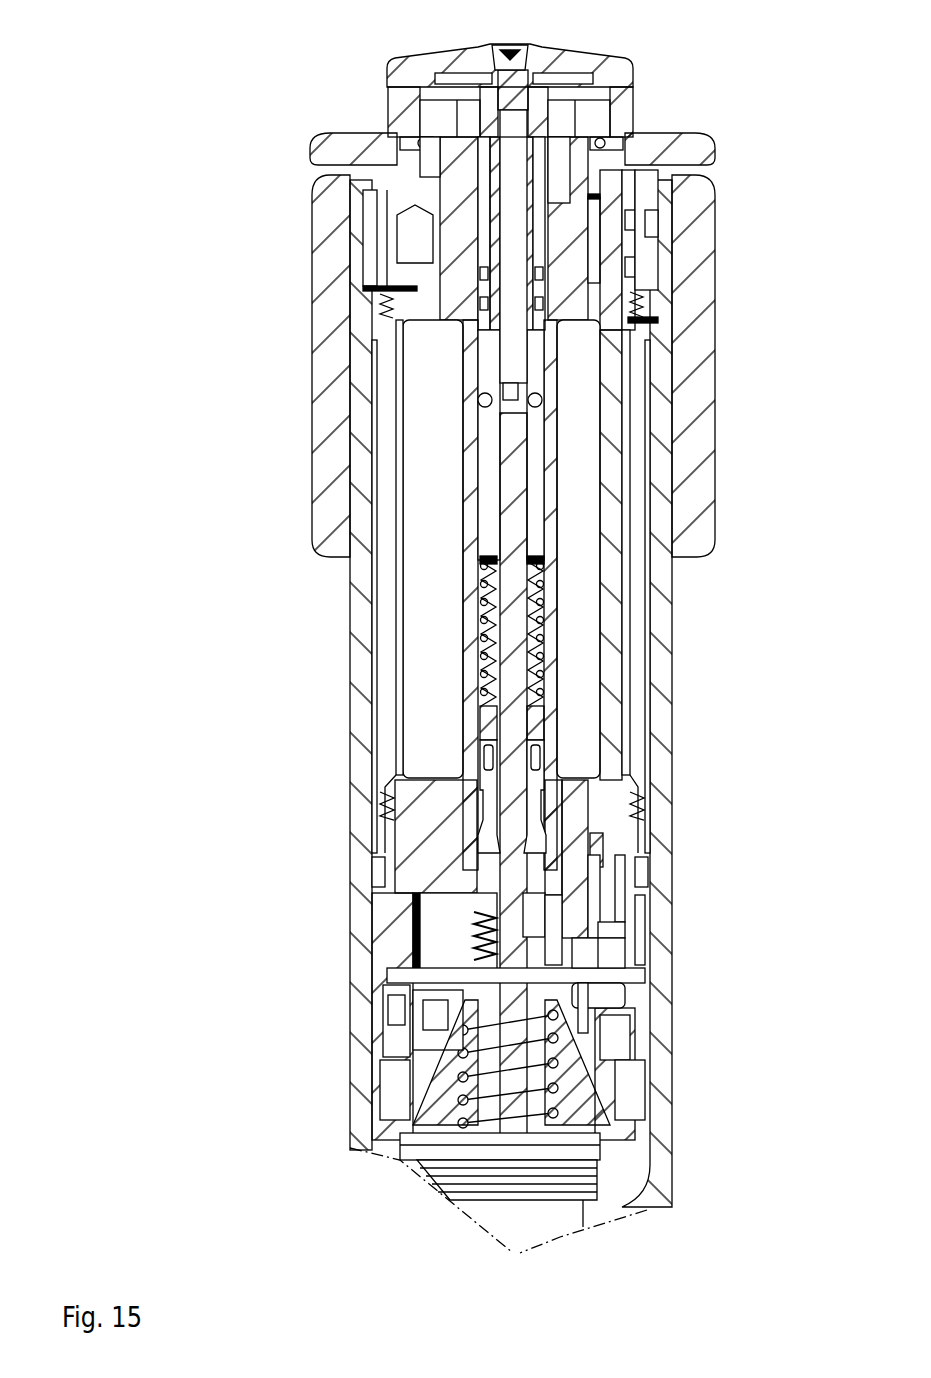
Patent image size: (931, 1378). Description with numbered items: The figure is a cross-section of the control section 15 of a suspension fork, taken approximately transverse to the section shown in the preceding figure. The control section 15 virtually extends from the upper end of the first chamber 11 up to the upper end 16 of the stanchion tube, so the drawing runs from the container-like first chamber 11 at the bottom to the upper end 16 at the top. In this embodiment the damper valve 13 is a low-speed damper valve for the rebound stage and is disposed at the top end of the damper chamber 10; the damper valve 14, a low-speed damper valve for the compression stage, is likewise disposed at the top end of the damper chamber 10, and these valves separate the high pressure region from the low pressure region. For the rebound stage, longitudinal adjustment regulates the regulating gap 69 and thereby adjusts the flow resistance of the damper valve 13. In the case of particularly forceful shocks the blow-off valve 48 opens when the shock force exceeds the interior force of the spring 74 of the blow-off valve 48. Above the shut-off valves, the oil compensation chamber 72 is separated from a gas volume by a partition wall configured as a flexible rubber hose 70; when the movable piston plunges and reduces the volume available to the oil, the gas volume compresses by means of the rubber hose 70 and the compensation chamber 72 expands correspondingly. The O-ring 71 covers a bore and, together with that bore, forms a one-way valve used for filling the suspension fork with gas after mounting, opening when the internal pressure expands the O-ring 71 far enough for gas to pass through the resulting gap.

The damper chamber 10 is at (507, 1237).
The first chamber 11 is at (545, 1227).
The damper valve 13 is at (610, 587).
The damper valve 14 is at (487, 1150).
The control section 15 is at (200, 566).
The upper end 16 is at (235, 97).
The blow-off valve 48 is at (487, 853).
The regulating gap 69 is at (640, 950).
The rubber hose 70 is at (395, 397).
The O-ring 71 is at (477, 400).
The oil compensation chamber 72 is at (383, 487).
The spring 74 is at (485, 676).